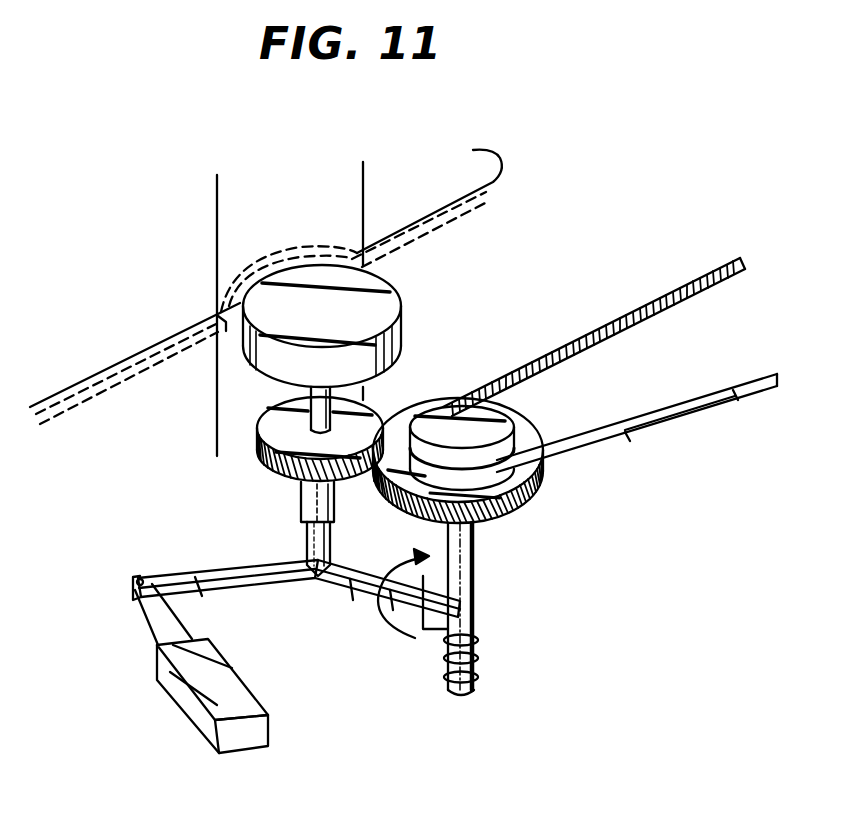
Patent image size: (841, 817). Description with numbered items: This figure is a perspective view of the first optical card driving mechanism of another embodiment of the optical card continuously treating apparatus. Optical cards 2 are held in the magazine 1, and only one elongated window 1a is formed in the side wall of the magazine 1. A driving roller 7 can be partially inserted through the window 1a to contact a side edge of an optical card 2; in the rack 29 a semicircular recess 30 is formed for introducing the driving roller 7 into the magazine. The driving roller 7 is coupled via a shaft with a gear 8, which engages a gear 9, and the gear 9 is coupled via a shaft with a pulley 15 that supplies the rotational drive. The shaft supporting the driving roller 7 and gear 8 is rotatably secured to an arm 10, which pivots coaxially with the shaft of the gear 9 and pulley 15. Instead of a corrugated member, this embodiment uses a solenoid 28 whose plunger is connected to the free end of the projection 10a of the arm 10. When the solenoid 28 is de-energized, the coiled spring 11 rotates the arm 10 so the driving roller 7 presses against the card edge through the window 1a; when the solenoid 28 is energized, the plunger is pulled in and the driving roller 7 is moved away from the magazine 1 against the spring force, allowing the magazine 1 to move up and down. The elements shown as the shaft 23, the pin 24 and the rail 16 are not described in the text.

The magazine 1 is at (118, 405).
The window 1a is at (283, 217).
The optical card 2 is at (445, 187).
The driving roller 7 is at (385, 315).
The gear 8 is at (520, 483).
The gear 9 is at (367, 422).
The arm 10 is at (387, 593).
The projection 10a is at (248, 573).
The coiled spring 11 is at (473, 667).
The pulley 15 is at (513, 415).
The arm 16 is at (707, 404).
The shaft 23 is at (473, 564).
The pin 24 is at (311, 541).
The solenoid 28 is at (255, 700).
The rack 29 is at (62, 412).
The semicircular recess 30 is at (250, 263).